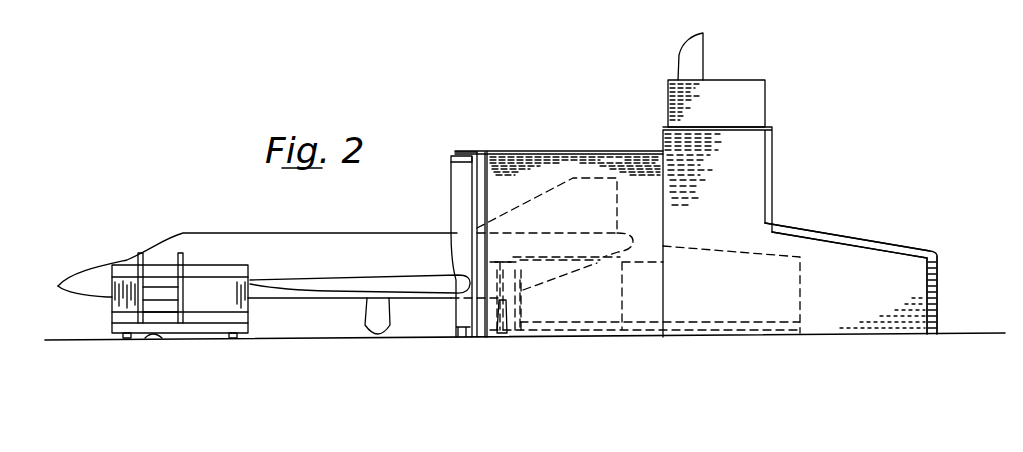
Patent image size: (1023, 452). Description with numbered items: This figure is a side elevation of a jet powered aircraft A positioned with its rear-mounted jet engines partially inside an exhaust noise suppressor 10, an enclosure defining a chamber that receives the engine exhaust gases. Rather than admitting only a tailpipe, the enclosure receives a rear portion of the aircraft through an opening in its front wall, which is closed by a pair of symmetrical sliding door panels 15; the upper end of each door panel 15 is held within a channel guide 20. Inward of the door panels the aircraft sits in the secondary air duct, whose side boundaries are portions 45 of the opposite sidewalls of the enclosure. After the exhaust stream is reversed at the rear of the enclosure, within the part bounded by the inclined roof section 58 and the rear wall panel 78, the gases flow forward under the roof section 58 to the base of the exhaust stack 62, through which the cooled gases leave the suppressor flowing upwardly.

The jet powered aircraft A is at (229, 231).
The suppressor 10 is at (788, 224).
The door panel 15 is at (457, 183).
The channel guide 20 is at (450, 157).
The sidewall portion 45 is at (557, 160).
The inclined roof section 58 is at (870, 238).
The exhaust stack 62 is at (752, 100).
The rear wall panel 78 is at (938, 298).